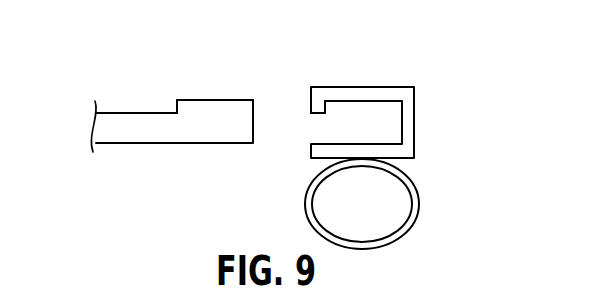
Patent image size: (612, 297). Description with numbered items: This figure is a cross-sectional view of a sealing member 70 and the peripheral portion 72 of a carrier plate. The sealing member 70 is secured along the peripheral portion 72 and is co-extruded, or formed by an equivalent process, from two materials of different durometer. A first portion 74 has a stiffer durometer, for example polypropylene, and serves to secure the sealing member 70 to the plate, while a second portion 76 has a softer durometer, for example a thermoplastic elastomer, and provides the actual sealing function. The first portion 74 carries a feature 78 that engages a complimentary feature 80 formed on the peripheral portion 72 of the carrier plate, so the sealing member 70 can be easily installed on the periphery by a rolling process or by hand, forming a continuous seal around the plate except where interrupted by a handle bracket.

The sealing member 70 is at (422, 145).
The peripheral portion 72 is at (190, 133).
The first portion 74 is at (408, 101).
The second portion 76 is at (415, 203).
The feature 78 is at (319, 102).
The complimentary feature 80 is at (211, 110).